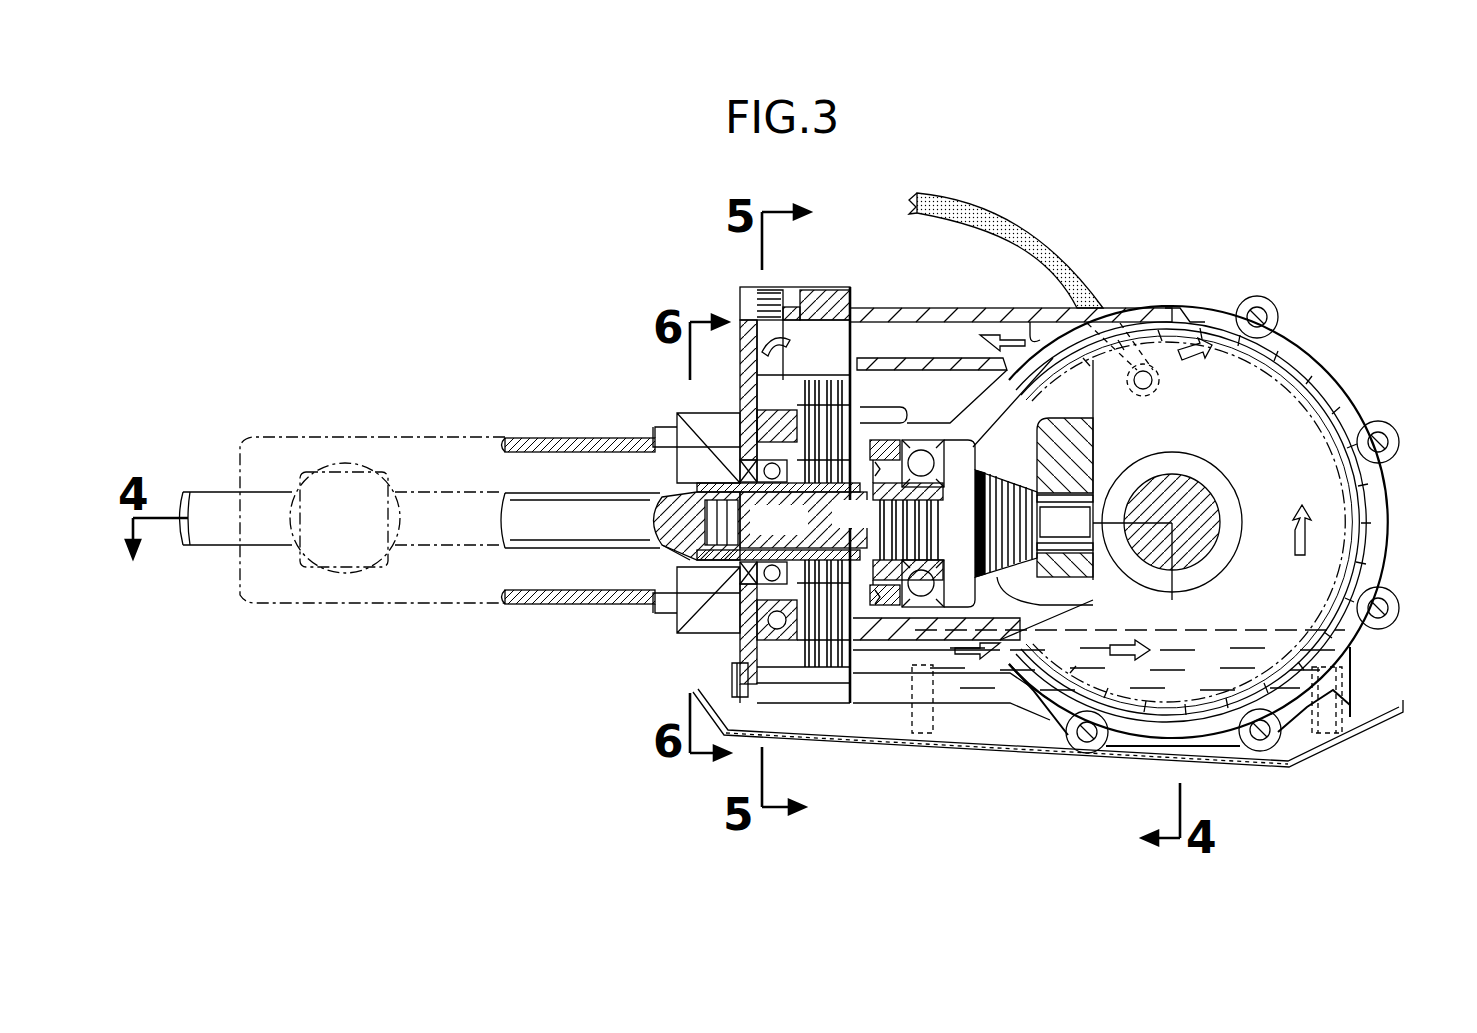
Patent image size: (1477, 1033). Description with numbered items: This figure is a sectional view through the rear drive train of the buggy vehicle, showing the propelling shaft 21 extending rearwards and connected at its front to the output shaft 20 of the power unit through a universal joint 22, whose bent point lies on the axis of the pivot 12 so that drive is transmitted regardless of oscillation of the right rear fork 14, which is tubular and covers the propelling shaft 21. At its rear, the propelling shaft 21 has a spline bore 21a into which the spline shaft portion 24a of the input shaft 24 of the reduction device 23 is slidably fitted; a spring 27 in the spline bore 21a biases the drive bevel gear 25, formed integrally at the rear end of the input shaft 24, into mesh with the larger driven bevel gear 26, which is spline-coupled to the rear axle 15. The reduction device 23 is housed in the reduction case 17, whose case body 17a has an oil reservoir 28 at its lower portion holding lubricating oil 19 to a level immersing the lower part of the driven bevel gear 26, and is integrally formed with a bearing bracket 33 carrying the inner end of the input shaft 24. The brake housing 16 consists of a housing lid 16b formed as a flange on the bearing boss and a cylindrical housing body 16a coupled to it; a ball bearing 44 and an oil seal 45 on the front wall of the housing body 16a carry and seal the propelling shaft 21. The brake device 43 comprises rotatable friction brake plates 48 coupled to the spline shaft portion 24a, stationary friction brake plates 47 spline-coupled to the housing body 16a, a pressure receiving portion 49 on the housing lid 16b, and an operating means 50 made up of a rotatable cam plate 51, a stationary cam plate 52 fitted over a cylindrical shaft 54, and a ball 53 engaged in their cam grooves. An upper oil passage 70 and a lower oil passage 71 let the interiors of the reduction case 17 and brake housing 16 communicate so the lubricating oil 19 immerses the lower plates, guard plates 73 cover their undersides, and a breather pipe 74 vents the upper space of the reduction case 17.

The pivot 12 is at (360, 573).
The right rear fork 14 is at (530, 437).
The rear axle 15 is at (1197, 500).
The brake housing 16 is at (783, 797).
The housing body 16a is at (837, 703).
The housing lid 16b is at (883, 703).
The reduction case 17 is at (1366, 497).
The case body 17a is at (1207, 330).
The lubricating oil 19 is at (1250, 625).
The output shaft 20 is at (215, 488).
The propelling shaft 21 is at (580, 503).
The spline bore 21a is at (695, 530).
The universal joint 22 is at (340, 468).
The reduction device 23 is at (1288, 380).
The input shaft 24 is at (925, 447).
The spline shaft portion 24a is at (782, 521).
The drive bevel gear 25 is at (1050, 565).
The driven bevel gear 26 is at (1313, 393).
The spring 27 is at (700, 493).
The oil reservoir 28 is at (1315, 668).
The bearing bracket 33 is at (1093, 433).
The brake device 43 is at (870, 308).
The ball bearing 44 is at (753, 432).
The oil seal 45 is at (740, 469).
The stationary friction brake plates 47 is at (838, 382).
The rotatable friction brake plates 48 is at (822, 570).
The pressure receiving portion 49 is at (860, 400).
The operating means 50 is at (705, 630).
The rotatable cam plate 51 is at (842, 690).
The stationary cam plate 52 is at (757, 610).
The ball 53 is at (760, 690).
The cylindrical shaft 54 is at (740, 590).
The upper oil passage 70 is at (1037, 330).
The lower oil passage 71 is at (1003, 672).
The guard plates 73 is at (1337, 748).
The breather pipe 74 is at (1057, 237).